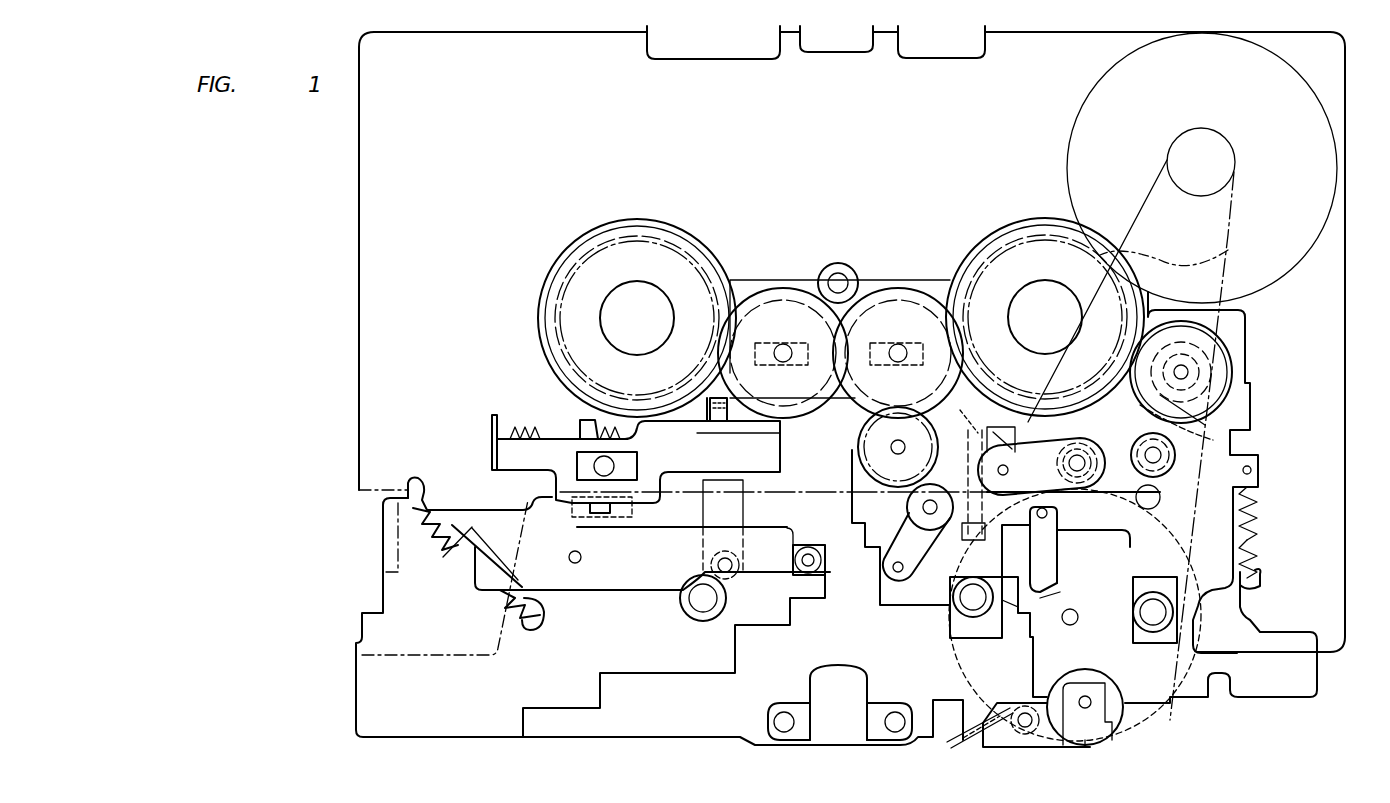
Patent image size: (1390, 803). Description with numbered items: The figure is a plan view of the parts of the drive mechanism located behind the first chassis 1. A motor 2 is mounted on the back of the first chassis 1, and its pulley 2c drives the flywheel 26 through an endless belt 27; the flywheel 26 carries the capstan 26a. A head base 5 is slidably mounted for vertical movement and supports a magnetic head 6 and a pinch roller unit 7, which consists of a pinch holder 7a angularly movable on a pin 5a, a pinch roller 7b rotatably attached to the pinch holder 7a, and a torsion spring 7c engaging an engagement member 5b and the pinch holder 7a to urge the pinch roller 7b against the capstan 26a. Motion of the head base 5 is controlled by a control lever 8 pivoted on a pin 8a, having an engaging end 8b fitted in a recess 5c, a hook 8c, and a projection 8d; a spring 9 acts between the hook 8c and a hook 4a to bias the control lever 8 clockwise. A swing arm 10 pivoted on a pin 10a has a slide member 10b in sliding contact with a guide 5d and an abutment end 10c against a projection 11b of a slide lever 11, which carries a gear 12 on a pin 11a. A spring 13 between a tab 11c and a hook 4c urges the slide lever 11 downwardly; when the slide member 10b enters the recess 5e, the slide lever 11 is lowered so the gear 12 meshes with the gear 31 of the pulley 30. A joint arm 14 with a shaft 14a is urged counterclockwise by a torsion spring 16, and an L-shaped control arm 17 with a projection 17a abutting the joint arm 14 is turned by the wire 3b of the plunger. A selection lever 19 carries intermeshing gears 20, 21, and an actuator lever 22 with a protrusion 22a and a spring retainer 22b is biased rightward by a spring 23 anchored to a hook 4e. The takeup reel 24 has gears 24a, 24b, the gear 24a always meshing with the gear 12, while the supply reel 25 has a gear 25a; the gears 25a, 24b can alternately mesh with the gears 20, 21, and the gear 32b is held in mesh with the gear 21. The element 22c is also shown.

The first chassis 1 is at (1335, 72).
The motor 2 is at (1322, 128).
The pulley 2c is at (1236, 162).
The endless belt 27 is at (1228, 255).
The wire 3b is at (964, 409).
The hook 4a is at (410, 478).
The hook 4c is at (1264, 582).
The hook 4e is at (580, 425).
The head base 5 is at (636, 735).
The pin 5a is at (1020, 735).
The engagement member 5b is at (950, 743).
The recess 5c is at (790, 540).
The guide 5d is at (1020, 605).
The recess 5e is at (1028, 628).
The magnetic head 6 is at (832, 740).
The pinch roller unit 7 is at (1060, 745).
The pinch holder 7a is at (1090, 747).
The pinch roller 7b is at (1115, 718).
The torsion spring 7c is at (968, 745).
The control lever 8 is at (596, 577).
The pin 8a is at (573, 565).
The engaging end 8b is at (795, 590).
The hook 8c is at (534, 628).
The projection 8d is at (722, 582).
The spring 9 is at (445, 510).
The swing arm 10 is at (1058, 555).
The pin 10a is at (1000, 540).
The slide member 10b is at (1048, 588).
The abutment end 10c is at (1132, 530).
The slide lever 11 is at (1222, 592).
The pin 11a is at (1190, 373).
The projection 11b is at (1258, 505).
The tab 11c is at (1252, 470).
The gear 12 is at (1228, 345).
The spring 13 is at (1258, 555).
The joint arm 14 is at (1048, 452).
The shaft 14a is at (996, 445).
The torsion spring 16 is at (1130, 450).
The control arm 17 is at (920, 555).
The projection 17a is at (985, 478).
The selection lever 19 is at (848, 265).
The gear 20 is at (782, 280).
The gear 21 is at (895, 280).
The actuator lever 22 is at (548, 455).
The protrusion 22a is at (710, 410).
The spring retainer 22b is at (491, 428).
The control lever window 22c is at (603, 520).
The spring 23 is at (512, 432).
The takeup reel 24 is at (1052, 300).
The gear 24a is at (1015, 218).
The gear 24b is at (972, 250).
The supply reel 25 is at (660, 298).
The gear 25a is at (635, 245).
The flywheel 26 is at (1170, 712).
The capstan 26a is at (1078, 624).
The pulley 30 is at (1232, 445).
The gear 31 is at (1215, 430).
The gear 32b is at (866, 440).